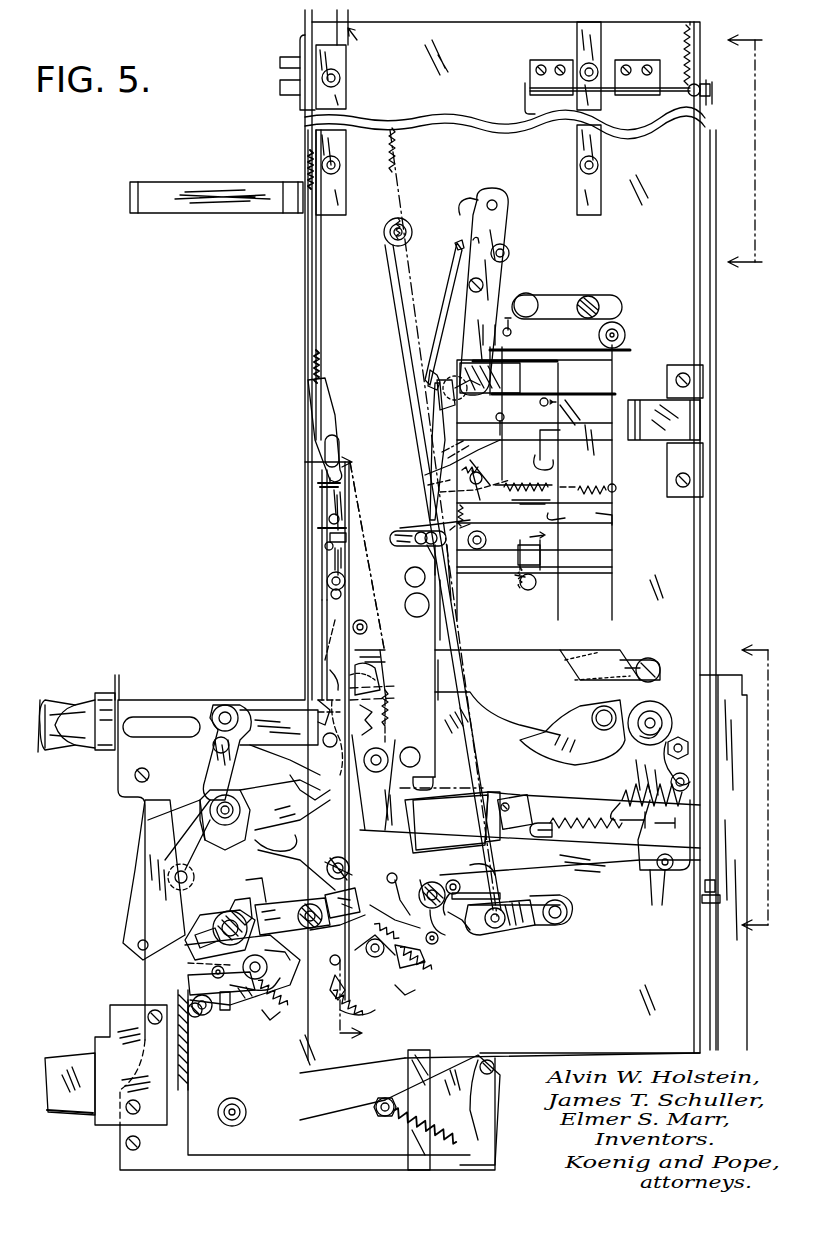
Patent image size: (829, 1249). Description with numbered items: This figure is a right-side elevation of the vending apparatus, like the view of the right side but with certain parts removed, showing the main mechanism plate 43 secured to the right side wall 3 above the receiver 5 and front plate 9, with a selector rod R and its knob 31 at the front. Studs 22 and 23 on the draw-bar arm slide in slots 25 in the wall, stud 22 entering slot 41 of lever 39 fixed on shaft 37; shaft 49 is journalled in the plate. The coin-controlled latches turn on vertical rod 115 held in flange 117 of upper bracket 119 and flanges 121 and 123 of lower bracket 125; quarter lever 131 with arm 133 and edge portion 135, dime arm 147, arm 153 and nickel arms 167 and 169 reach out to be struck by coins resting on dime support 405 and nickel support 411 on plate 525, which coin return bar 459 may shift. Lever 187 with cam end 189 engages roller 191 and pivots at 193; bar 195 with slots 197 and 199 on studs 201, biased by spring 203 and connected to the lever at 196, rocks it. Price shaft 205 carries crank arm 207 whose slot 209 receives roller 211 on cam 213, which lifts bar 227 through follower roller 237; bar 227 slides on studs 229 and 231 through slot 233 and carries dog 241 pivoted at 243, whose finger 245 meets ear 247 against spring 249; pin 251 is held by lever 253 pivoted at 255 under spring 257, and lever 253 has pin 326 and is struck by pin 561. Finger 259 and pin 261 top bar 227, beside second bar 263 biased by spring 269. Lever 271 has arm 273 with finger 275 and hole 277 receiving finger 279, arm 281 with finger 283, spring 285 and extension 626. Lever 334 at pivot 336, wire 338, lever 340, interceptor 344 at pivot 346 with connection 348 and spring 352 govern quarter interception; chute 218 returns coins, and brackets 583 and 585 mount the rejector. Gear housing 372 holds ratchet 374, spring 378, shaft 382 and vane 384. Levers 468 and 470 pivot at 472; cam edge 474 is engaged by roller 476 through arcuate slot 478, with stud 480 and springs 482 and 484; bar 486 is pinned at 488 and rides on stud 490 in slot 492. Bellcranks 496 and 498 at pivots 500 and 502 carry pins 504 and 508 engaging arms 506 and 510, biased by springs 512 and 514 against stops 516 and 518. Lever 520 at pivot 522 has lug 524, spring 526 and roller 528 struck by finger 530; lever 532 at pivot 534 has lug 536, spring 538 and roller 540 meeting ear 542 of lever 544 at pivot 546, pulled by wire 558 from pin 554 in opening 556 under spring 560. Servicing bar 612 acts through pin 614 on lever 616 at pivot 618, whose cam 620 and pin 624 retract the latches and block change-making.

The right side wall 3 is at (733, 684).
The receiver 5 is at (91, 1038).
The front plate 9 is at (117, 673).
The selector or pull-out rod R is at (109, 685).
The knob 31 is at (72, 712).
The forward stud 22 is at (223, 706).
The rearward stud 23 is at (761, 785).
The horizontal slots 25 is at (331, 749).
The shaft 37 is at (168, 878).
The lever 39 is at (160, 848).
The slot 41 is at (205, 732).
The main mechanism plate 43 is at (300, 132).
The shaft 49 is at (528, 587).
The vertical rod 115 is at (512, 585).
The upper horizontal flange 117 is at (520, 352).
The upper bracket 119 is at (564, 406).
The upper horizontal flange 121 is at (560, 436).
The lower horizontal flange 123 is at (555, 517).
The lower bracket 125 is at (555, 466).
The lever 131 is at (491, 323).
The arm 133 is at (512, 333).
The edge portion 135 is at (464, 332).
The arm 147 is at (534, 482).
The arm 153 is at (521, 420).
The upper arm 167 is at (523, 480).
The lower arm 169 is at (532, 497).
The lever 187 is at (428, 500).
The cam end portion 189 is at (472, 480).
The roller 191 is at (440, 453).
The pivot 193 is at (476, 550).
The bar 195 is at (440, 620).
The arm 196 is at (418, 524).
The vertical slot 197 is at (383, 581).
The vertical slot 199 is at (433, 776).
The studs 201 is at (413, 747).
The spring 203 is at (392, 716).
The price shaft 205 is at (212, 828).
The crank arm 207 is at (235, 800).
The slot 209 is at (285, 812).
The roller 211 is at (290, 842).
The cam 213 is at (300, 777).
The chute 218 is at (318, 270).
The bar 227 is at (320, 505).
The upper stud 229 is at (327, 581).
The lower stud 231 is at (327, 870).
The upper elongate slot 233 is at (331, 594).
The follower roller 237 is at (278, 729).
The dog 241 is at (320, 692).
The pivot 243 is at (299, 712).
The finger 245 is at (390, 689).
The ear 247 is at (380, 682).
The spring 249 is at (303, 739).
The pin 251 is at (312, 696).
The lever 253 is at (452, 822).
The pivot 255 is at (375, 772).
The spring 257 is at (354, 718).
The finger 259 is at (320, 482).
The pin 261 is at (328, 520).
The second bar 263 is at (326, 652).
The spring 269 is at (400, 881).
The lever 271 is at (425, 477).
The forwardly extending arm 273 is at (418, 546).
The finger 275 is at (328, 537).
The hole 277 is at (326, 547).
The finger 279 is at (332, 552).
The upwardly extending arm 281 is at (440, 422).
The finger 283 is at (443, 387).
The spring 285 is at (605, 492).
The pin 326 is at (432, 869).
The lever 334 is at (716, 904).
The pivot 336 is at (713, 892).
The wire 338 is at (712, 143).
The lever 340 is at (710, 82).
The interceptor 344 is at (526, 100).
The pivot 346 is at (532, 78).
The connection 348 is at (692, 95).
The spring 352 is at (685, 52).
The gear housing 372 is at (462, 1060).
The ratchet 374 is at (485, 1060).
The spring 378 is at (405, 1125).
The shaft 382 is at (392, 1100).
The vane 384 is at (408, 1060).
The dime support 405 is at (555, 388).
The nickel support 411 is at (546, 540).
The coin return bar 459 is at (362, 33).
The lever 468 is at (520, 800).
The lever 470 is at (695, 845).
The pivot 472 is at (655, 722).
The cam edge 474 is at (545, 732).
The roller 476 is at (600, 708).
The arcuate slot 478 is at (522, 728).
The stud 480 is at (688, 787).
The spring 482 is at (692, 820).
The spring 484 is at (605, 823).
The bar 486 is at (605, 885).
The pin connection 488 is at (678, 887).
The stud 490 is at (212, 920).
The elongate slot 492 is at (196, 936).
The bellcrank lever 496 is at (268, 988).
The bellcrank lever 498 is at (407, 958).
The pivot 500 is at (268, 970).
The pivot 502 is at (421, 945).
The pin 504 is at (192, 978).
The arm 506 is at (190, 964).
The pin 508 is at (325, 977).
The arm 510 is at (367, 940).
The spring 512 is at (262, 1020).
The spring 514 is at (408, 987).
The stop 516 is at (205, 1014).
The stop 518 is at (346, 988).
The lever 520 is at (288, 905).
The pivot 522 is at (312, 903).
The lug 524 is at (241, 901).
The plate 525 is at (604, 512).
The spring 526 is at (268, 958).
The roller 528 is at (353, 893).
The finger 530 is at (341, 917).
The lever 532 is at (458, 928).
The pivot 534 is at (435, 882).
The lug 536 is at (450, 824).
The spring 538 is at (452, 936).
The roller 540 is at (486, 860).
The ear 542 is at (500, 890).
The lever 544 is at (500, 930).
The pivot 546 is at (567, 912).
The pin 554 is at (402, 236).
The opening 556 is at (402, 220).
The wire 558 is at (392, 272).
The spring 560 is at (396, 155).
The pin 561 is at (395, 926).
The bracket 583 is at (318, 62).
The bracket 585 is at (334, 148).
The bar 612 is at (160, 208).
The pin 614 is at (492, 200).
The lever 616 is at (500, 216).
The pivot 618 is at (484, 282).
The cam 620 is at (458, 345).
The pin 624 is at (477, 240).
The upward extension 626 is at (457, 245).